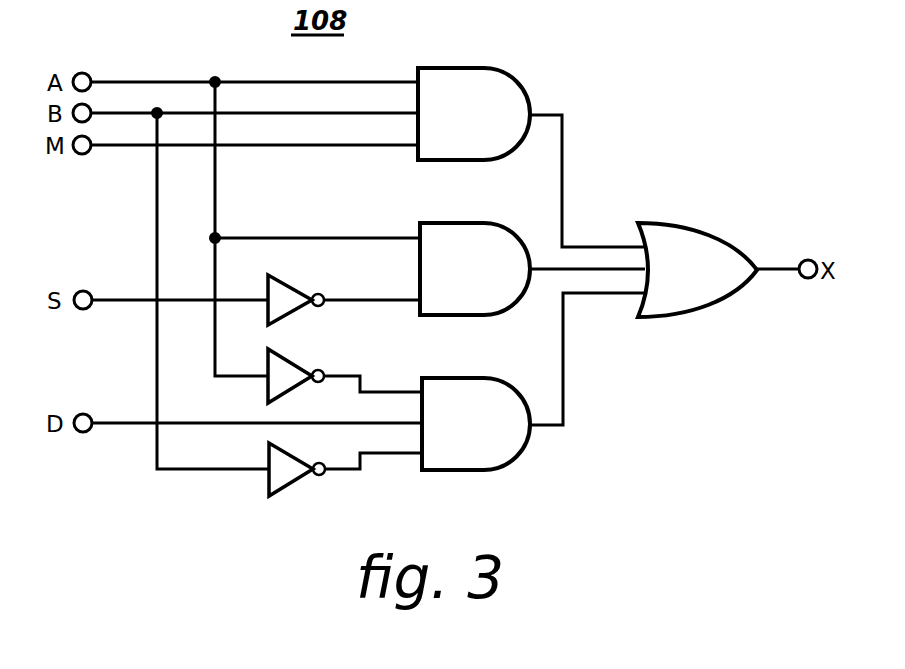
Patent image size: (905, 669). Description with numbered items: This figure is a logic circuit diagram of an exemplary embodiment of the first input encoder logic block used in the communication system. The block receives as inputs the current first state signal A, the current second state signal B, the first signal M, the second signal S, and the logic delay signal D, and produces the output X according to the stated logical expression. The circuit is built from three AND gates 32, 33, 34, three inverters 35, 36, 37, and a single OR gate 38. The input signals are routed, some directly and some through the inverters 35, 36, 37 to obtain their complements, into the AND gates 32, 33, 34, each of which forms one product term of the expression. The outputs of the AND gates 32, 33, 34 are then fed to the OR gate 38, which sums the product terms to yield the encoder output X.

The AND gate 32 is at (465, 68).
The AND gate 33 is at (465, 223).
The AND gate 34 is at (467, 378).
The inverter 35 is at (286, 283).
The inverter 36 is at (286, 359).
The inverter 37 is at (290, 486).
The OR gate 38 is at (660, 223).